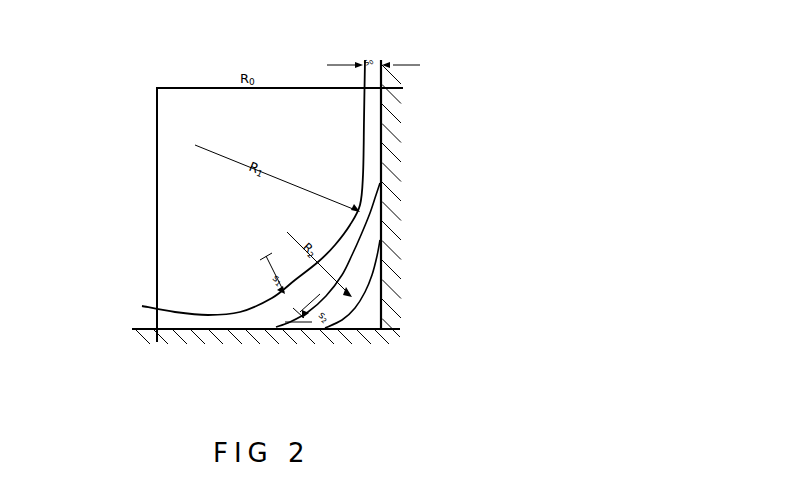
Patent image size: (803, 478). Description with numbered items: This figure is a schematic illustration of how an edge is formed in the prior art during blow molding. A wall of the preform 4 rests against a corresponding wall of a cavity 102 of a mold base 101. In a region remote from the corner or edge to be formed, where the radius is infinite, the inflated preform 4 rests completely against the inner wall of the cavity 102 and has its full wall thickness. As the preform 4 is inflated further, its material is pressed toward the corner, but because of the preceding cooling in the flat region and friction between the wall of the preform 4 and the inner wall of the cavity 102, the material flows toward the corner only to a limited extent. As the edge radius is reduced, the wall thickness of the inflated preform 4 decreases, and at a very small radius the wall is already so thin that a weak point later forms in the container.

The preform 4 is at (370, 115).
The mold base 101 is at (390, 171).
The cavity 102 is at (235, 211).